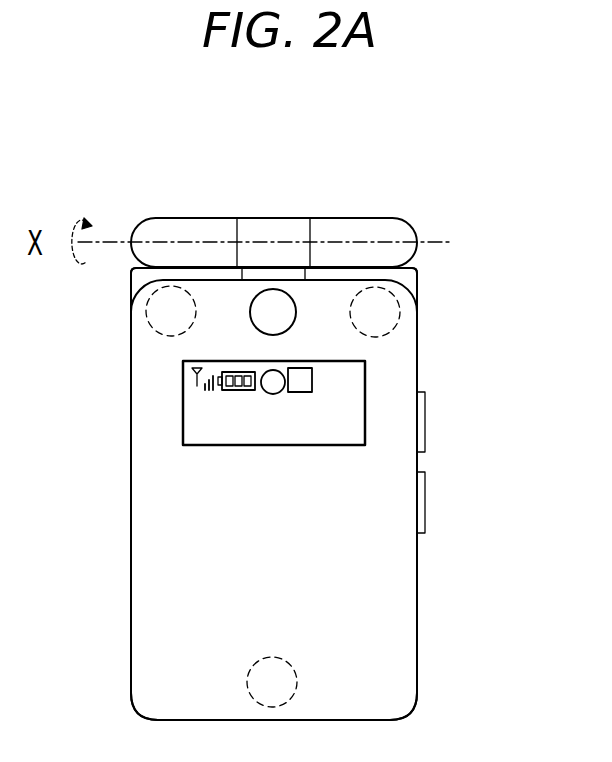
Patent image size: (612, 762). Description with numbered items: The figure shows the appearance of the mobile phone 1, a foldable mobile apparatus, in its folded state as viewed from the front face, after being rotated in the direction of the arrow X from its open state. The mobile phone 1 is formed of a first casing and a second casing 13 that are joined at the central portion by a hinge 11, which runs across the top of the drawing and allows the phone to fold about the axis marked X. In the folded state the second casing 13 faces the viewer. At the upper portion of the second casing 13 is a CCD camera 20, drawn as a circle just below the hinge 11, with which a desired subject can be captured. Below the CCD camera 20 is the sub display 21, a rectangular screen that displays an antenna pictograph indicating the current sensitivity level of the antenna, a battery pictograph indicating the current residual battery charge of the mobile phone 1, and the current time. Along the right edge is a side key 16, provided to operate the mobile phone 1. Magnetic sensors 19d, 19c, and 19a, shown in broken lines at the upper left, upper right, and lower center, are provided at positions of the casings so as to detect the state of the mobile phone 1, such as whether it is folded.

The mobile phone 1 is at (443, 610).
The hinge 11 is at (417, 224).
The second casing 13 is at (131, 437).
The side key 16 is at (425, 420).
The magnetic sensor 19a is at (248, 680).
The magnetic sensor 19c is at (399, 318).
The magnetic sensor 19d is at (147, 318).
The CCD camera 20 is at (273, 288).
The sub display 21 is at (182, 402).